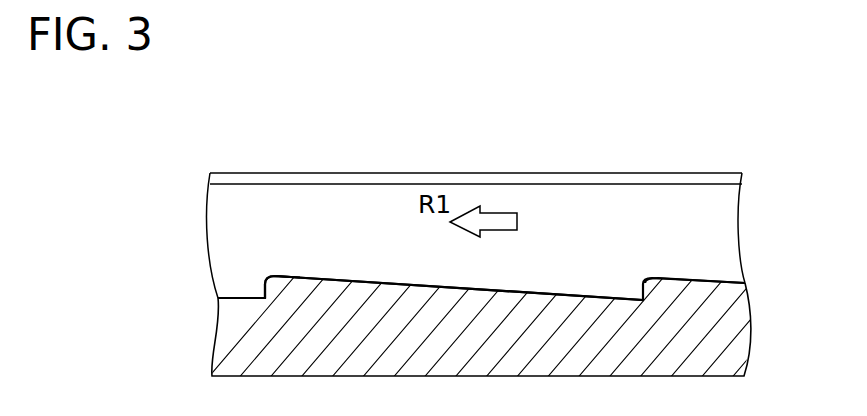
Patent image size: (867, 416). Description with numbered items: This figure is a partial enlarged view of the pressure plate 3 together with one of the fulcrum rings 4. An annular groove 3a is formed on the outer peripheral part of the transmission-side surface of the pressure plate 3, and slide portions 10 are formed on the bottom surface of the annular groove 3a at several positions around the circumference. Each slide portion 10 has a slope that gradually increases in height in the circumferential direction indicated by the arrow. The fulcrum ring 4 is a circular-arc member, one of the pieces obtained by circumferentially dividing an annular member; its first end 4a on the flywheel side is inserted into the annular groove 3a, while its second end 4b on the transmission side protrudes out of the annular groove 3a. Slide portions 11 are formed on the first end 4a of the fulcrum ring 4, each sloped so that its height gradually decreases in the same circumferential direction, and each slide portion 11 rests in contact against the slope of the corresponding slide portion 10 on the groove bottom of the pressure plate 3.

The pressure plate 3 is at (725, 337).
The annular groove 3a is at (233, 291).
The fulcrum ring 4 is at (745, 222).
The first end 4a is at (708, 283).
The second end 4b is at (670, 173).
The slide portion 10 is at (276, 267).
The slide portion 11 is at (338, 284).